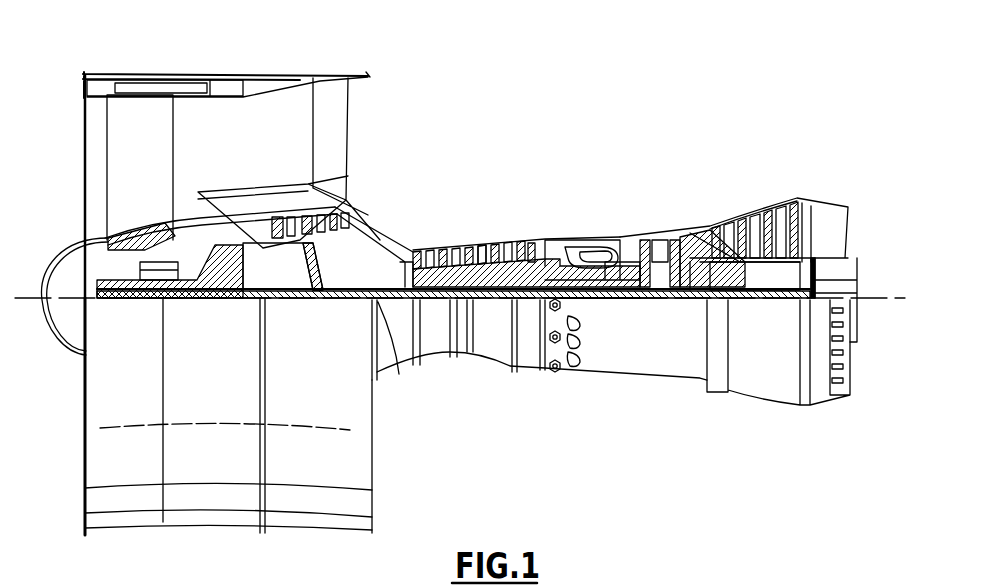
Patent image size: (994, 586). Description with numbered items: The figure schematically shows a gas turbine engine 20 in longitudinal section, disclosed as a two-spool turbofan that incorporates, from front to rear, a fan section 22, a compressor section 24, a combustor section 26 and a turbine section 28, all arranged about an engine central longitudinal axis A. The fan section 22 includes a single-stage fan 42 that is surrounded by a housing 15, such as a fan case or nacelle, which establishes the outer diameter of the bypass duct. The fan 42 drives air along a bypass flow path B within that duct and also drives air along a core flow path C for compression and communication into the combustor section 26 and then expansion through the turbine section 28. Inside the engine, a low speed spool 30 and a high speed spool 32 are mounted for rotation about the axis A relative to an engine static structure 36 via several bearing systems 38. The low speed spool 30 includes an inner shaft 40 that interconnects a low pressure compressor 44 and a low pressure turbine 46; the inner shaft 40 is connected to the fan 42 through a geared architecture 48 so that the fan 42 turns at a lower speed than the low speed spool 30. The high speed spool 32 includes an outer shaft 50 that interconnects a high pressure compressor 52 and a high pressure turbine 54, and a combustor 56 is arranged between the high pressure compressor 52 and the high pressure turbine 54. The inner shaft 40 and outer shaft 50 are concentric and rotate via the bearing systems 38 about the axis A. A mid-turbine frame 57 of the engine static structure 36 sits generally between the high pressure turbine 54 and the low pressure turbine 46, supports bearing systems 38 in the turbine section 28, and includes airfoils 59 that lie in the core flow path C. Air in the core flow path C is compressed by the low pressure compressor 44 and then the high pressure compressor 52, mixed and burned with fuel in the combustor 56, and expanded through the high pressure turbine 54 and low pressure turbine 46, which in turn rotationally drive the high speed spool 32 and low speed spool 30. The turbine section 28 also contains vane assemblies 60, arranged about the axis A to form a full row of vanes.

The housing 15 is at (228, 80).
The gas turbine engine 20 is at (470, 268).
The fan section 22 is at (172, 66).
The compressor section 24 is at (414, 222).
The combustor section 26 is at (592, 223).
The turbine section 28 is at (738, 258).
The low speed spool 30 is at (493, 312).
The high speed spool 32 is at (531, 250).
The engine static structure 36 is at (527, 380).
The bearing systems 38 is at (336, 290).
The inner shaft 40 is at (392, 362).
The fan 42 is at (150, 176).
The low pressure compressor 44 is at (312, 232).
The low pressure turbine 46 is at (757, 198).
The geared architecture 48 is at (230, 286).
The outer shaft 50 is at (592, 300).
The high pressure compressor 52 is at (484, 250).
The high pressure turbine 54 is at (645, 242).
The combustor 56 is at (590, 236).
The mid-turbine frame 57 is at (694, 224).
The airfoils 59 is at (716, 278).
The vane assemblies 60 is at (691, 232).
The engine central longitudinal axis A is at (905, 298).
The bypass flow path B is at (192, 135).
The core flow path C is at (226, 216).